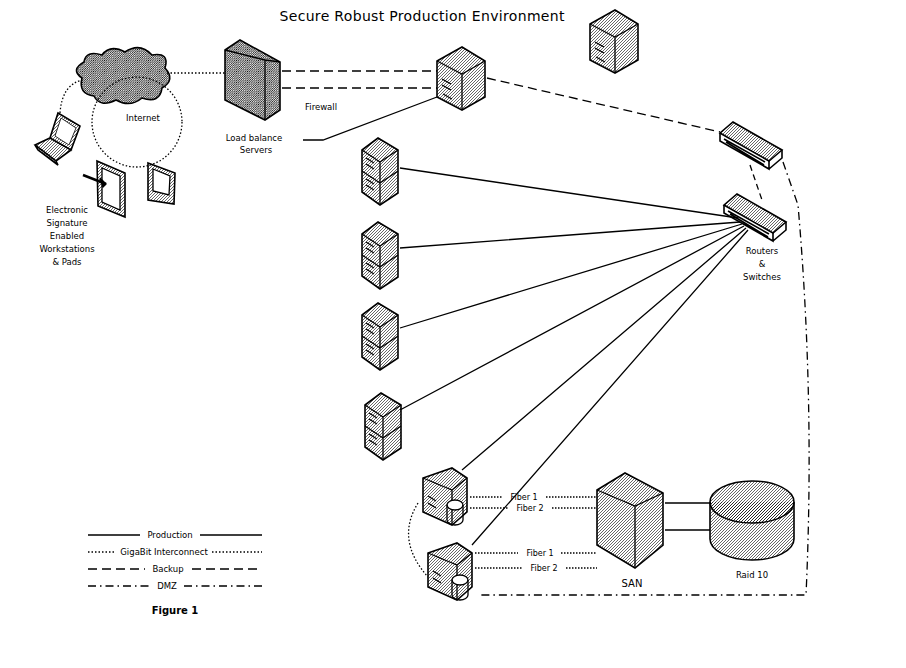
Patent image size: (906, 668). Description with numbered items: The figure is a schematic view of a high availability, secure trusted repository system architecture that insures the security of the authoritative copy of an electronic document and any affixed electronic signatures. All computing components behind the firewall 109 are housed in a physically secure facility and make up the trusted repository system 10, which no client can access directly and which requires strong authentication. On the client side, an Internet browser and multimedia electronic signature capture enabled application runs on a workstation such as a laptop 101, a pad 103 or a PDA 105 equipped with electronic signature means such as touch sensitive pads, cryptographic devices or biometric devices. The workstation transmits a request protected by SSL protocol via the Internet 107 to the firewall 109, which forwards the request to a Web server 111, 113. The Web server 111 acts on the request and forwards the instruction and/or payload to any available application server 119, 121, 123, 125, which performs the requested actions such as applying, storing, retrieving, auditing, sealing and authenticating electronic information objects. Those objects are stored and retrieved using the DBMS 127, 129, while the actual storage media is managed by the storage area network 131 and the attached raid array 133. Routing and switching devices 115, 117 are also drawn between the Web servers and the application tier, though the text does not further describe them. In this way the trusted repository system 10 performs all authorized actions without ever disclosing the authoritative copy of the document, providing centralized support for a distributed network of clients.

The trusted repository system 10 is at (222, 394).
The laptop 101 is at (57, 140).
The pad 103 is at (109, 195).
The PDA 105 is at (171, 186).
The Internet 107 is at (122, 76).
The firewall 109 is at (249, 80).
The Web server 111 is at (459, 89).
The Web server 113 is at (614, 52).
The router 115 is at (744, 145).
The switch 117 is at (747, 217).
The application server 119 is at (379, 177).
The application server 121 is at (379, 261).
The application server 123 is at (379, 343).
The application server 125 is at (385, 431).
The DBMS 127 is at (435, 505).
The DBMS 129 is at (444, 585).
The storage area network 131 is at (630, 520).
The raid array 133 is at (752, 512).